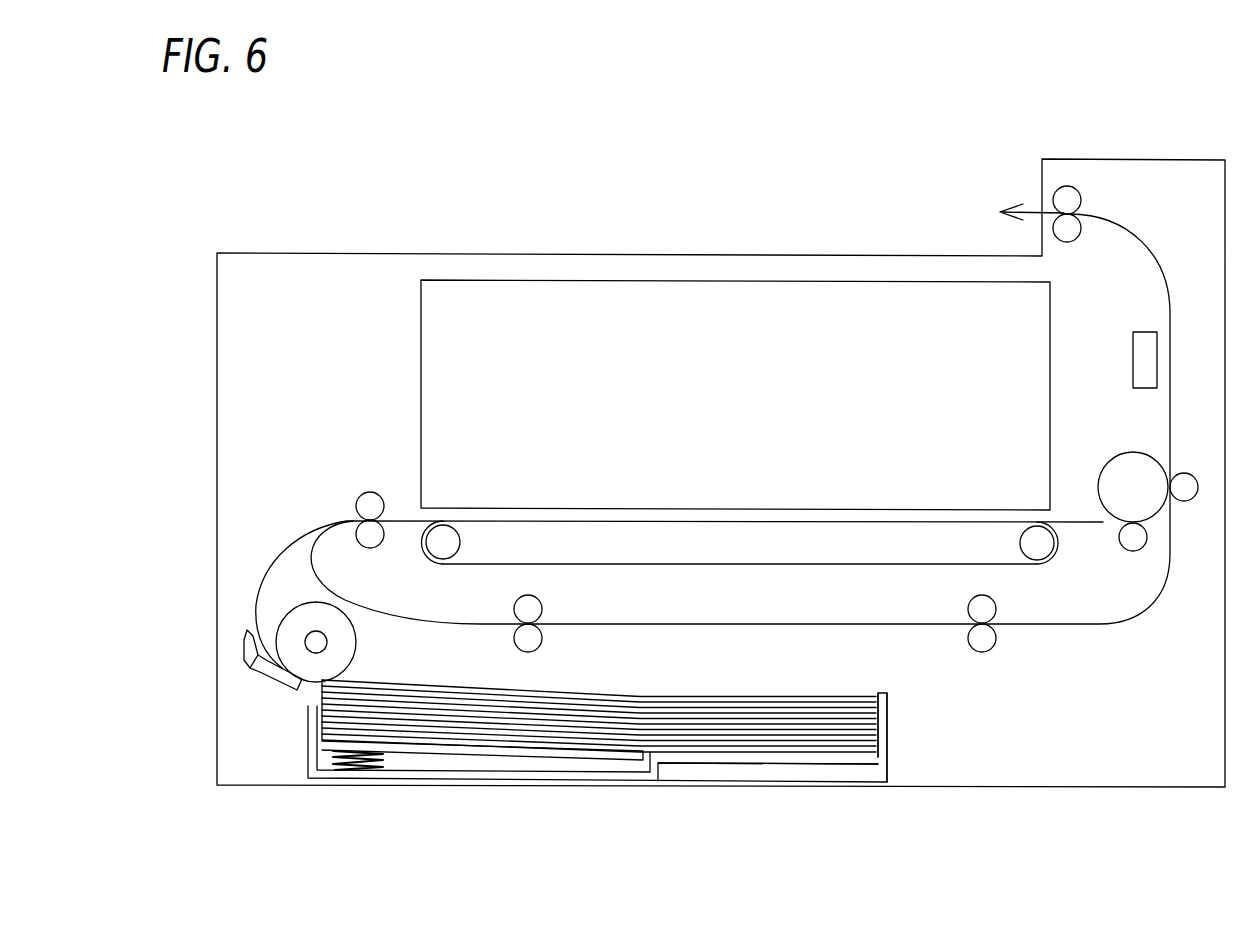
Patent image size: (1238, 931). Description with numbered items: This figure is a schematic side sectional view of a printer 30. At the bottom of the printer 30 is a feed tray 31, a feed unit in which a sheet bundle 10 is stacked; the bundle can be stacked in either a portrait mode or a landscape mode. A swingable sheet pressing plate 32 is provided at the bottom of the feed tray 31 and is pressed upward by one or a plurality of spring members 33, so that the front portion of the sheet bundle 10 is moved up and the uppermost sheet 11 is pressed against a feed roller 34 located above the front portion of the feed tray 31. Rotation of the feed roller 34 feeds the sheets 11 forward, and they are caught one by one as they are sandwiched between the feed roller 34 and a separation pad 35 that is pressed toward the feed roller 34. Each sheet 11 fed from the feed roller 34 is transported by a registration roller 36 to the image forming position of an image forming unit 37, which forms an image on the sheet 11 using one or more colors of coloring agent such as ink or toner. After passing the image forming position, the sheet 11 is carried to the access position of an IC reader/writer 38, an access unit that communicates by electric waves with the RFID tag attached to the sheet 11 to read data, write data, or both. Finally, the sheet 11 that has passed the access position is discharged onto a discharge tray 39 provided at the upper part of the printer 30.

The sheet bundle 10 is at (635, 684).
The sheet 11 is at (772, 750).
The printer 30 is at (903, 153).
The feed tray 31 is at (608, 779).
The sheet pressing plate 32 is at (532, 750).
The spring member 33 is at (355, 771).
The feed roller 34 is at (345, 652).
The separation pad 35 is at (272, 674).
The registration roller 36 is at (372, 492).
The image forming unit 37 is at (829, 284).
The IC reader/writer 38 is at (1142, 358).
The discharge tray 39 is at (688, 253).